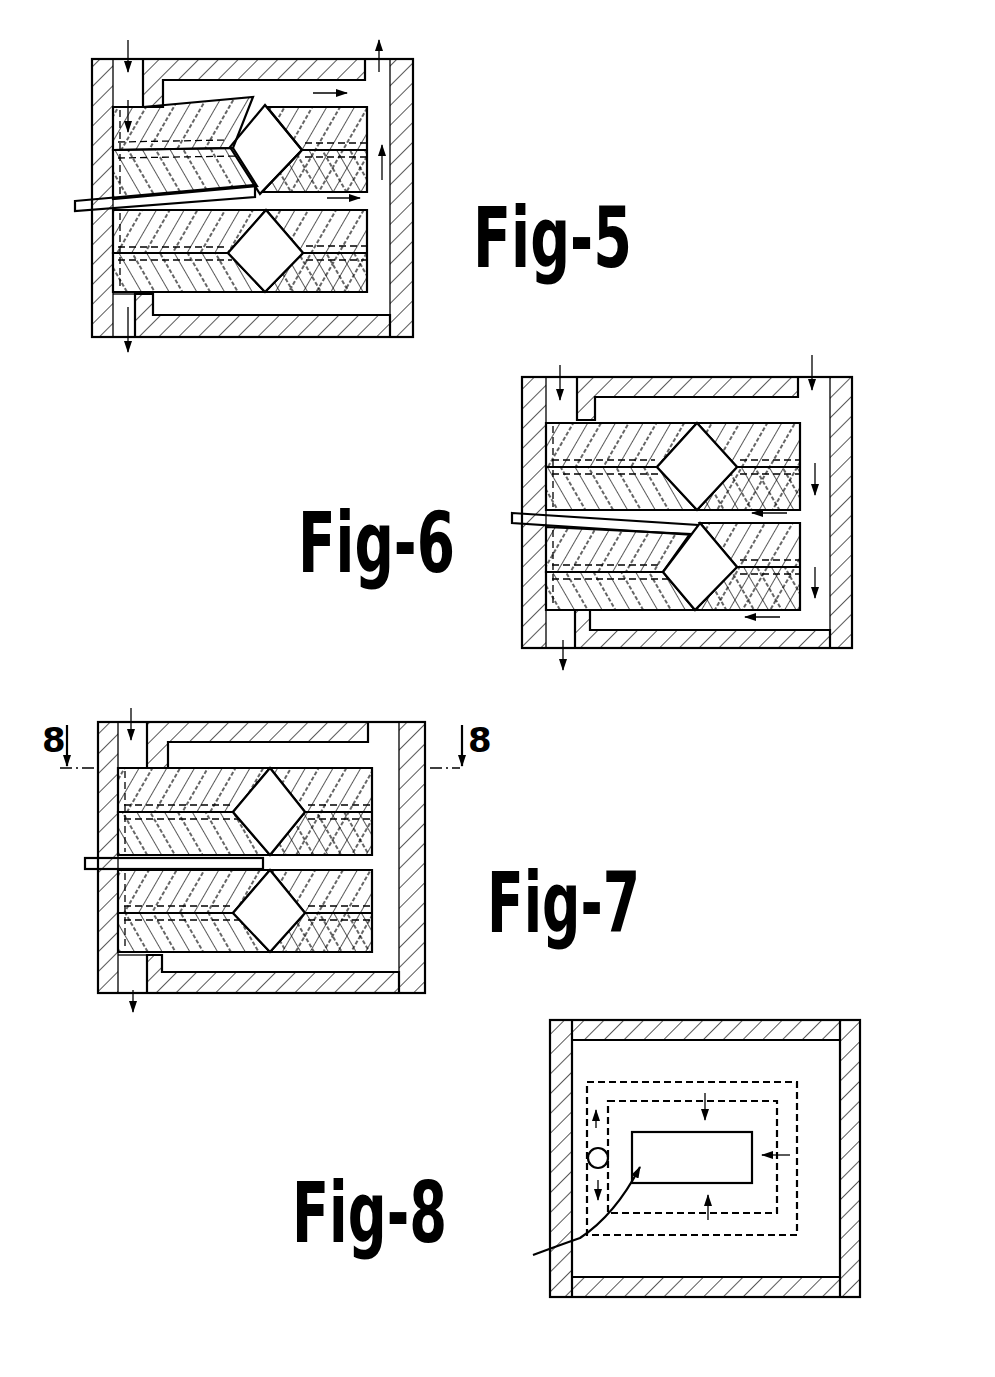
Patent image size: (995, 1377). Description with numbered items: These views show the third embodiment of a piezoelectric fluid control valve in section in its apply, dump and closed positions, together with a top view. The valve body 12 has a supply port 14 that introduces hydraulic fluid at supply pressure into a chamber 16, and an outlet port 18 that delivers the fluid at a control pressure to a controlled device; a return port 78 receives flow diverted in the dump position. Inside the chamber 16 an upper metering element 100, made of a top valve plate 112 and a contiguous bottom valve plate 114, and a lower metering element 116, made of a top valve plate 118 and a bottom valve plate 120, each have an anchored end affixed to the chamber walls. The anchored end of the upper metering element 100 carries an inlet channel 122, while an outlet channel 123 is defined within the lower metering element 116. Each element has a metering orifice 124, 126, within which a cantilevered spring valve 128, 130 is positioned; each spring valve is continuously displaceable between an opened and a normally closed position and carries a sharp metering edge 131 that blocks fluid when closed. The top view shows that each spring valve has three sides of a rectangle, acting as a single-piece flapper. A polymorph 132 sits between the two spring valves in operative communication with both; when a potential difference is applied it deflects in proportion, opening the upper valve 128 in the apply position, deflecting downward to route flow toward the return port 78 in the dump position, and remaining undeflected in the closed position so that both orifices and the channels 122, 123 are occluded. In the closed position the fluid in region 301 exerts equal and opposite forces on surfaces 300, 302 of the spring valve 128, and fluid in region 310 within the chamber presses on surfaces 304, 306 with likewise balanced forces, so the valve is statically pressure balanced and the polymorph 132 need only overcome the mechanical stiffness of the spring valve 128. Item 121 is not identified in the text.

In FIG. 5, the valve body 12 is at (407, 207).
In FIG. 6, the valve body 12 is at (687, 512).
In FIG. 7, the valve body 12 is at (261, 857).
In FIG. 8, the valve body 12 is at (808, 1025).
In FIG. 5, the supply port 14 is at (118, 57).
In FIG. 6, the supply port 14 is at (563, 385).
In FIG. 7, the supply port 14 is at (137, 730).
In FIG. 8, the supply port 14 is at (587, 1158).
In FIG. 5, the chamber 16 is at (383, 273).
In FIG. 7, the chamber 16 is at (373, 908).
In FIG. 8, the chamber 16 is at (820, 1155).
In FIG. 5, the outlet port 18 is at (387, 70).
In FIG. 6, the outlet port 18 is at (830, 378).
In FIG. 7, the outlet port 18 is at (378, 728).
In FIG. 5, the return port 78 is at (117, 340).
In FIG. 6, the return port 78 is at (553, 642).
In FIG. 7, the return port 78 is at (123, 985).
In FIG. 5, the upper metering element 100 is at (368, 128).
In FIG. 7, the upper metering element 100 is at (373, 820).
In FIG. 8, the upper metering element 100 is at (657, 1050).
In FIG. 5, the top valve plate 112 is at (140, 117).
In FIG. 8, the top valve plate 112 is at (793, 1070).
In FIG. 5, the bottom valve plate 114 is at (163, 187).
In FIG. 5, the lower metering element 116 is at (368, 237).
In FIG. 5, the top valve plate 118 is at (118, 225).
In FIG. 5, the bottom valve plate 120 is at (160, 313).
In FIG. 5, the upper flow divider 121 is at (266, 149).
In FIG. 5, the inlet channel 122 is at (123, 148).
In FIG. 6, the inlet channel 122 is at (550, 442).
In FIG. 7, the inlet channel 122 is at (147, 797).
In FIG. 8, the inlet channel 122 is at (683, 1227).
In FIG. 5, the outlet channel 123 is at (253, 95).
In FIG. 6, the outlet channel 123 is at (550, 590).
In FIG. 7, the outlet channel 123 is at (147, 907).
In FIG. 5, the metering orifice 124 is at (270, 93).
In FIG. 6, the metering orifice 124 is at (697, 425).
In FIG. 7, the metering orifice 124 is at (272, 768).
In FIG. 8, the metering orifice 124 is at (747, 1150).
In FIG. 5, the metering orifice 126 is at (297, 251).
In FIG. 6, the metering orifice 126 is at (700, 603).
In FIG. 7, the metering orifice 126 is at (272, 950).
In FIG. 5, the cantilevered spring valve 128 is at (197, 107).
In FIG. 7, the cantilevered spring valve 128 is at (197, 763).
In FIG. 8, the cantilevered spring valve 128 is at (655, 1150).
In FIG. 5, the cantilevered spring valve 130 is at (270, 273).
In FIG. 8, the sharp metering edge 131 is at (567, 1219).
In FIG. 5, the polymorph 132 is at (93, 200).
In FIG. 6, the polymorph 132 is at (517, 516).
In FIG. 7, the polymorph 132 is at (93, 860).
In FIG. 7, the surface 300 is at (290, 816).
In FIG. 7, the region 301 is at (259, 782).
In FIG. 7, the surface 302 is at (257, 840).
In FIG. 7, the surface 304 is at (238, 768).
In FIG. 7, the surface 306 is at (157, 860).
In FIG. 7, the region 310 is at (343, 753).